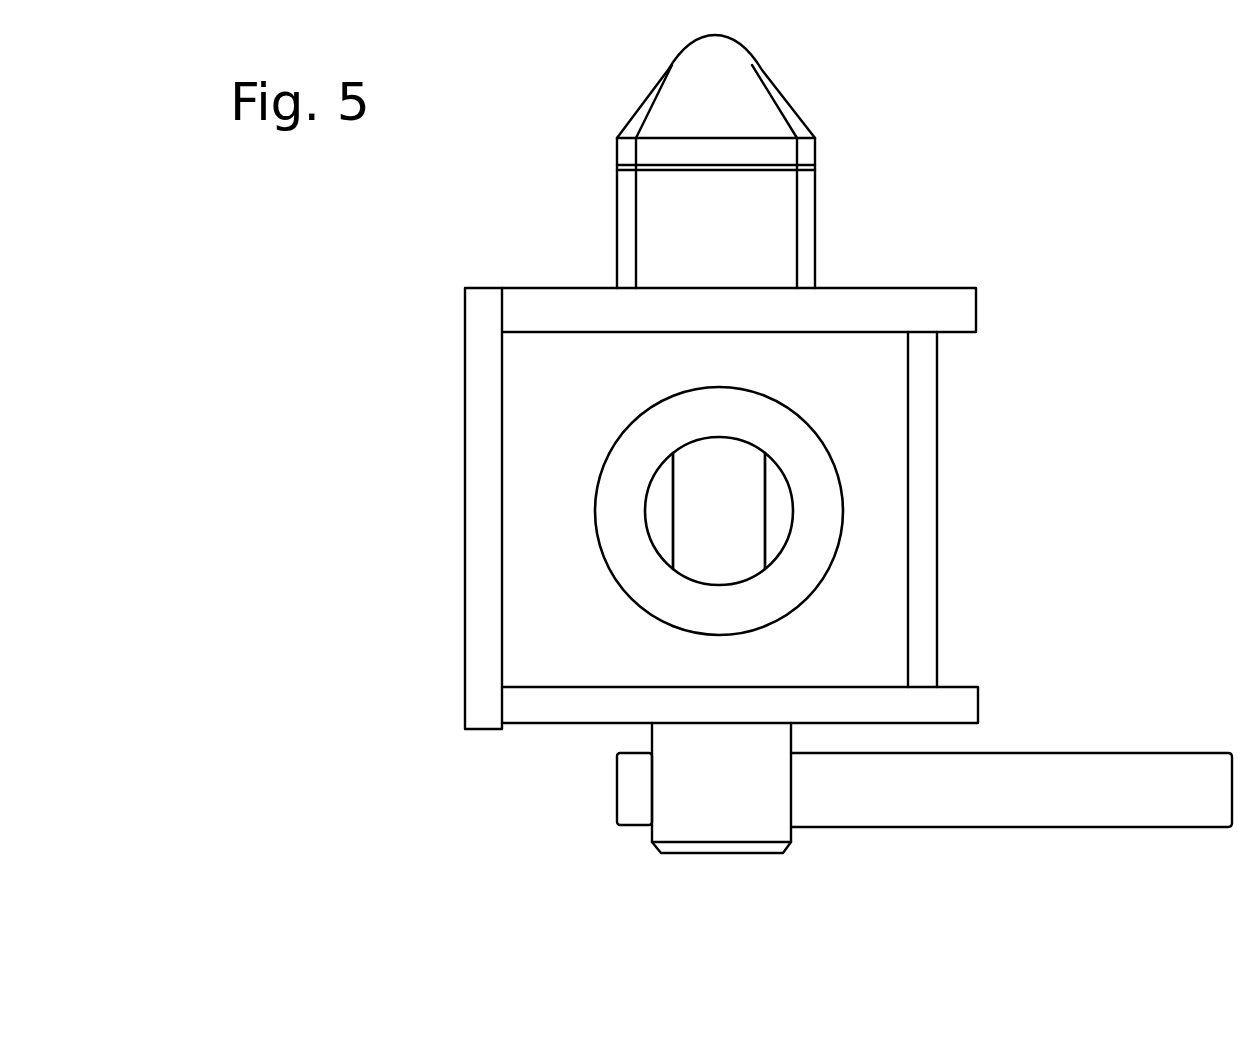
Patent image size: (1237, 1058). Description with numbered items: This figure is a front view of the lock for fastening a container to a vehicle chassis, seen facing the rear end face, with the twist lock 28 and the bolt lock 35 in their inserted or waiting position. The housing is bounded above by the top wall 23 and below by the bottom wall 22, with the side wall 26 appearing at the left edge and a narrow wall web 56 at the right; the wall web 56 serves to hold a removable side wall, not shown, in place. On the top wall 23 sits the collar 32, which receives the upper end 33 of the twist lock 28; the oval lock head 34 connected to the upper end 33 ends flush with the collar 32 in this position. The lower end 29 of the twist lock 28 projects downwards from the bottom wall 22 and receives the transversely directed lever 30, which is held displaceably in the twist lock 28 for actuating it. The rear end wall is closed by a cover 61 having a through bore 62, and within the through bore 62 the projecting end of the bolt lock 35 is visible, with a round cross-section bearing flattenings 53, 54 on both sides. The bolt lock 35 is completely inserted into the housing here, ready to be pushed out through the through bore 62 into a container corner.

The bottom wall 22 is at (555, 703).
The top wall 23 is at (545, 313).
The side wall 26 is at (478, 565).
The twist lock 28 is at (758, 737).
The lower end 29 is at (756, 825).
The lever 30 is at (1052, 797).
The collar 32 is at (803, 238).
The upper end 33 is at (768, 167).
The lock head 34 is at (748, 107).
The bolt lock 35 is at (708, 533).
The flattening 53 is at (765, 533).
The flattening 54 is at (670, 497).
The wall web 56 is at (923, 632).
The cover 61 is at (823, 517).
The through bore 62 is at (777, 488).